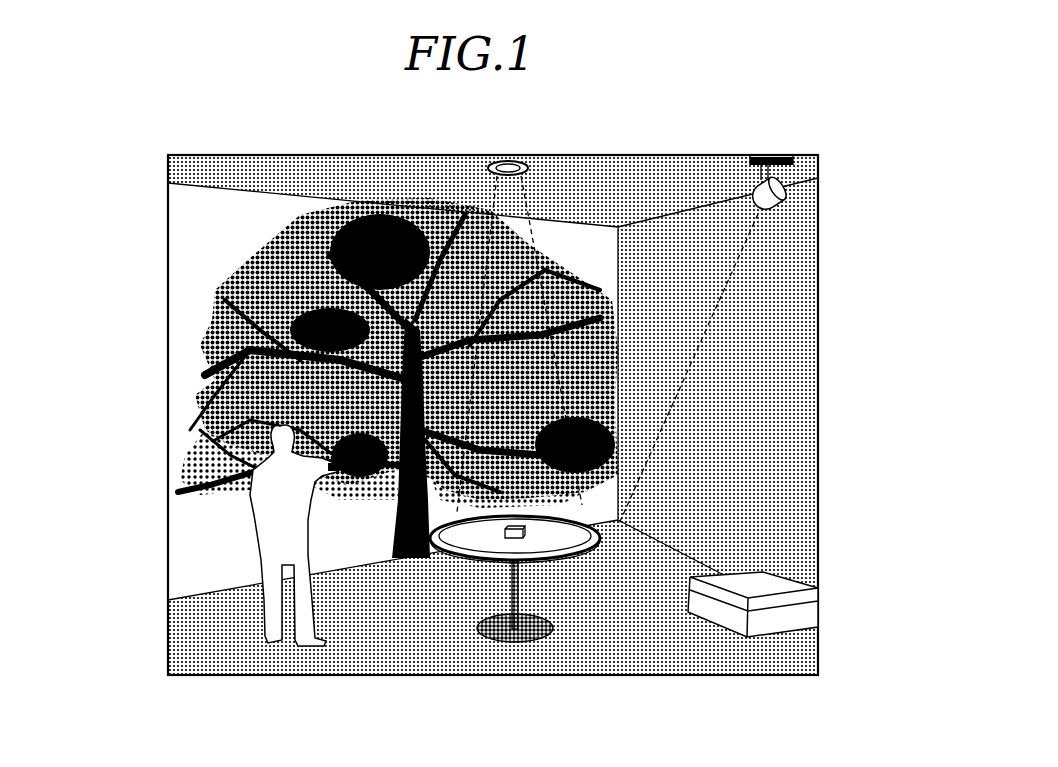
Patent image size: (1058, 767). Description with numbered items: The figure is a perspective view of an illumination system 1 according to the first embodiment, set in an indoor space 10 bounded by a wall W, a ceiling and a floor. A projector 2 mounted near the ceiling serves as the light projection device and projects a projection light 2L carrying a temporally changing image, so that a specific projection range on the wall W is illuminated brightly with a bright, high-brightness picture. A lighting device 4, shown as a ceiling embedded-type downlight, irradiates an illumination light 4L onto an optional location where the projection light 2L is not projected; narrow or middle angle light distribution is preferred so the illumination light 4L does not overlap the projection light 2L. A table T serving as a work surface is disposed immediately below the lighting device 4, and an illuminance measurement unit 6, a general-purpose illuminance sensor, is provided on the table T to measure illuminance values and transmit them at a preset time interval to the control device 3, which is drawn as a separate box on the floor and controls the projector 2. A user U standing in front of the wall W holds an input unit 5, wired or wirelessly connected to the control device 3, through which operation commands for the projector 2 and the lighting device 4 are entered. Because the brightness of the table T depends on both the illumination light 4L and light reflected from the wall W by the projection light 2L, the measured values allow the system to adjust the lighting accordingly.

The illumination system 1 is at (122, 210).
The space 10 is at (180, 256).
The wall W is at (186, 321).
The projector 2 is at (786, 191).
The projection light 2L is at (732, 286).
The lighting device 4 is at (518, 162).
The illumination light 4L is at (548, 298).
The user U is at (262, 556).
The input unit 5 is at (332, 468).
The illuminance measurement unit 6 is at (600, 521).
The table T is at (458, 556).
The control device 3 is at (797, 606).